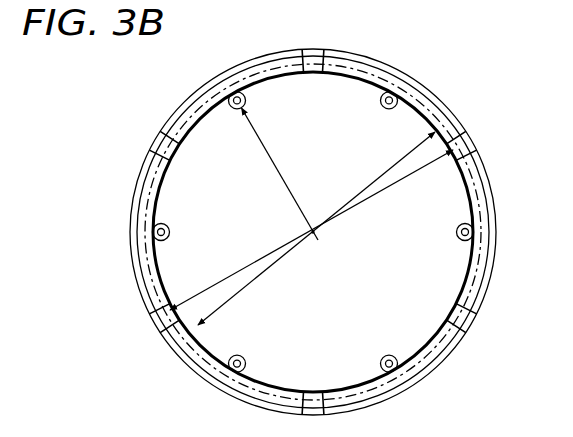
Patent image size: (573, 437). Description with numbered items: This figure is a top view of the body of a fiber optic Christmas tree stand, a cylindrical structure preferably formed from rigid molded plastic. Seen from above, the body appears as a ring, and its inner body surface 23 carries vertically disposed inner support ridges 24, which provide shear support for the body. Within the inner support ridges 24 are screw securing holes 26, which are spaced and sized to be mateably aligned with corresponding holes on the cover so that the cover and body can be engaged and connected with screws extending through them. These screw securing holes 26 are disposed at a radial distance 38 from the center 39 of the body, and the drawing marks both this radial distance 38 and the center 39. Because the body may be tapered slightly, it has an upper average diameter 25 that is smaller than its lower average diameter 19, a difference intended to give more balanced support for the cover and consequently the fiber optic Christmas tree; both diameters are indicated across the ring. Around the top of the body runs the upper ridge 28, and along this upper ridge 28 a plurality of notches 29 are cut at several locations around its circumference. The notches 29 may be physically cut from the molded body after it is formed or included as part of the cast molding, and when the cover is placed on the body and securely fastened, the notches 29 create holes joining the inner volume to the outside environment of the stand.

The lower average diameter 19 is at (358, 208).
The inner body surface 23 is at (162, 184).
The inner support ridges 24 is at (245, 105).
The upper average diameter 25 is at (250, 282).
The screw securing holes 26 is at (231, 90).
The upper ridge 28 is at (445, 96).
The notches 29 is at (155, 141).
The radial distance 38 is at (300, 208).
The center 39 is at (315, 234).